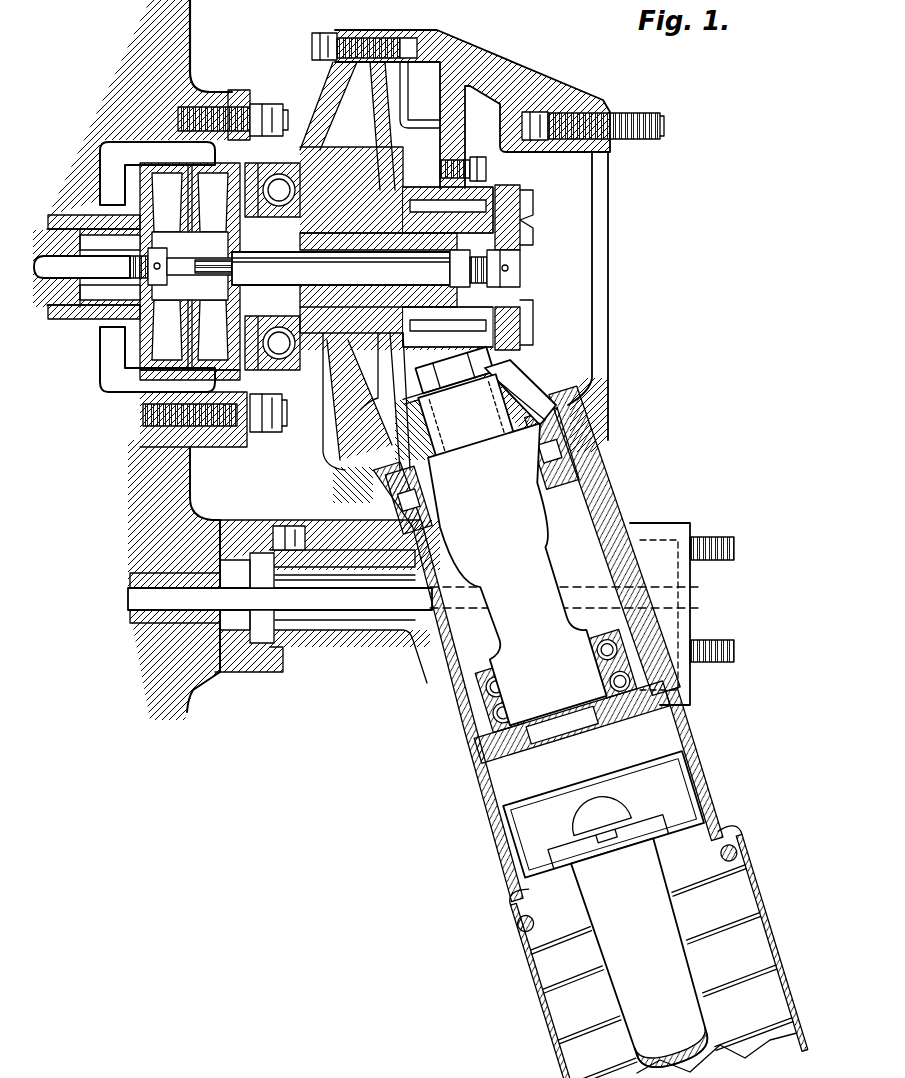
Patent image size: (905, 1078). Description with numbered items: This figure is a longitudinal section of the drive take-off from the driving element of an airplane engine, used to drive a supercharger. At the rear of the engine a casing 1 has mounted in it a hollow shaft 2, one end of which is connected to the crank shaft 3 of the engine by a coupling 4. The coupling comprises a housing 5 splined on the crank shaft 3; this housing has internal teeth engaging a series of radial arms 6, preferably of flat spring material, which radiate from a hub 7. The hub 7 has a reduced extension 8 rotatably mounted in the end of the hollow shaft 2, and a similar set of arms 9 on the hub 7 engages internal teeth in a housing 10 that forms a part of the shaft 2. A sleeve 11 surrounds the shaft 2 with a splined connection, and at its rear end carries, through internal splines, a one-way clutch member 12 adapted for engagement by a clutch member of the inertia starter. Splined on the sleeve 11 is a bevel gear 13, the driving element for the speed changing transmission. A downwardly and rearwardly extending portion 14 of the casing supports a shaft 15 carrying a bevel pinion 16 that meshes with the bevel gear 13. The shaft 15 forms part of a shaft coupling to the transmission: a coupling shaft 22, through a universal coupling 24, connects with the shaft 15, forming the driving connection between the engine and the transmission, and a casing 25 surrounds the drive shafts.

The casing 1 is at (500, 68).
The shaft 2 is at (410, 293).
The crank shaft 3 is at (65, 325).
The coupling 4 is at (186, 372).
The housing 5 is at (155, 395).
The radial arms 6 is at (160, 188).
The hub 7 is at (170, 300).
The reduced extension 8 is at (302, 280).
The arms 9 is at (208, 178).
The housing 10 is at (215, 365).
The sleeve 11 is at (352, 338).
The one-way clutch member 12 is at (522, 217).
The bevel gear 13 is at (382, 118).
The downwardly and rearwardly extending portion 14 is at (620, 482).
The shaft 15 is at (548, 556).
The bevel pinion 16 is at (535, 395).
The coupling shaft 22 is at (685, 990).
The universal coupling 24 is at (690, 798).
The casing 25 is at (758, 896).